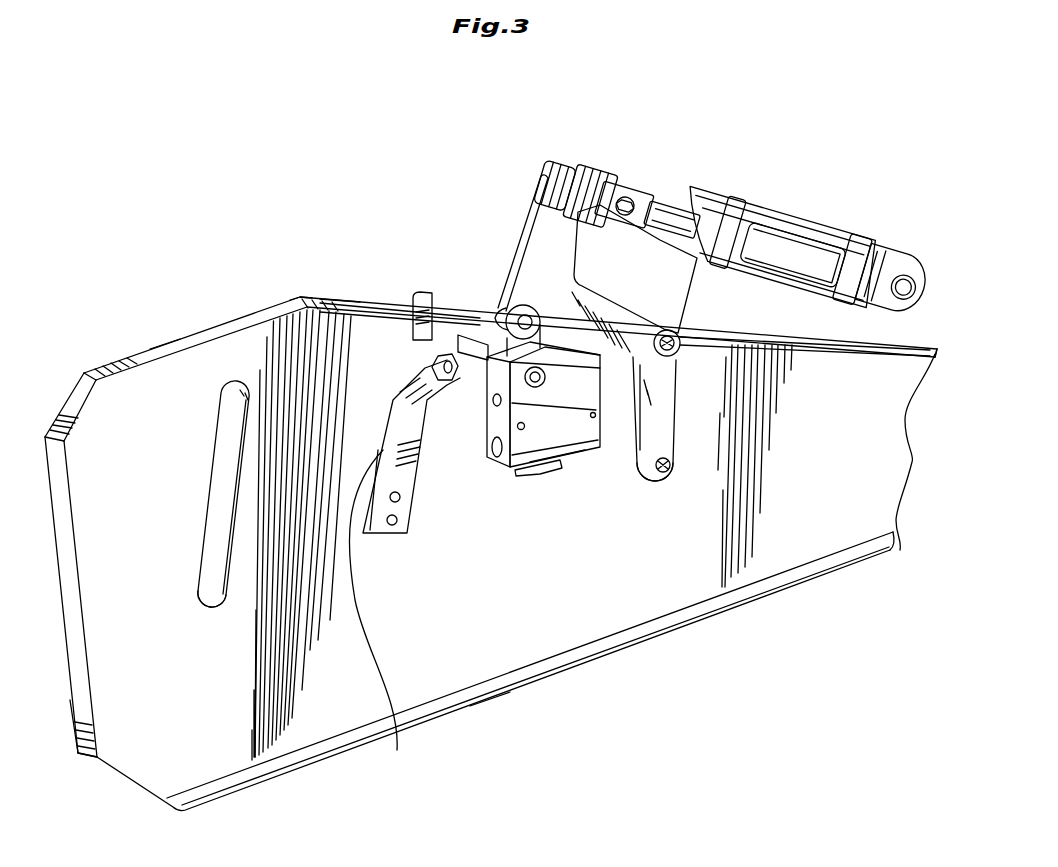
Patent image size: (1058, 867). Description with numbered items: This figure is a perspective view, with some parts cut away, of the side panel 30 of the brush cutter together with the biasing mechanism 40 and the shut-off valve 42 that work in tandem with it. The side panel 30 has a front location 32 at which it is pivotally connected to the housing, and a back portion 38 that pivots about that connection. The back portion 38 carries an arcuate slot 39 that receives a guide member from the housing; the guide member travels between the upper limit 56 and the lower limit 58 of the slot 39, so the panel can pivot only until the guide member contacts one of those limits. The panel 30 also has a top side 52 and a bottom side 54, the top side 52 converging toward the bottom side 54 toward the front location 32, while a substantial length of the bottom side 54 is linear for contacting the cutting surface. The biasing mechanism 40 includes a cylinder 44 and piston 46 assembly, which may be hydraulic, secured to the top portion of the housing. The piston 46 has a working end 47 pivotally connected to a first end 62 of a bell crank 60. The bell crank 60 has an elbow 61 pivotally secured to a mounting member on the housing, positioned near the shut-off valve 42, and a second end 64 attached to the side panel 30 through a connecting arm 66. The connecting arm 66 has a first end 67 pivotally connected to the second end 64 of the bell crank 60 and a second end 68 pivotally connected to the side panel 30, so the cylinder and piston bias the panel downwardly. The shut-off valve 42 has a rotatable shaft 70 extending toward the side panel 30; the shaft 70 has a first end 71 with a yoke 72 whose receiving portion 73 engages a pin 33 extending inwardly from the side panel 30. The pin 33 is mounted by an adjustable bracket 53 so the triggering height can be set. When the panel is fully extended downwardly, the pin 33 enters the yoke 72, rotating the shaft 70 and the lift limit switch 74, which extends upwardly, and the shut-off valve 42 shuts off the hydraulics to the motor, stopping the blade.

The side panel 30 is at (795, 512).
The front location 32 is at (900, 550).
The pin 33 is at (297, 305).
The back portion 38 is at (77, 693).
The arcuate slot 39 is at (168, 352).
The biasing mechanism 40 is at (478, 266).
The shut-off valve 42 is at (580, 440).
The cylinder 44 is at (770, 212).
The piston 46 is at (670, 200).
The working end 47 is at (590, 178).
The top side 52 is at (335, 298).
The bracket 53 is at (373, 611).
The bottom side 54 is at (490, 698).
The upper limit 56 is at (223, 468).
The lower limit 58 is at (217, 600).
The bell crank 60 is at (537, 260).
The elbow 61 is at (505, 305).
The first end 62 is at (545, 163).
The second end 64 is at (672, 330).
The connecting arm 66 is at (684, 400).
The first end 67 is at (672, 330).
The second end 68 is at (673, 480).
The rotatable shaft 70 is at (444, 356).
The first end 71 is at (420, 297).
The yoke 72 is at (490, 463).
The receiving portion 73 is at (455, 372).
The lift limit switch 74 is at (405, 303).